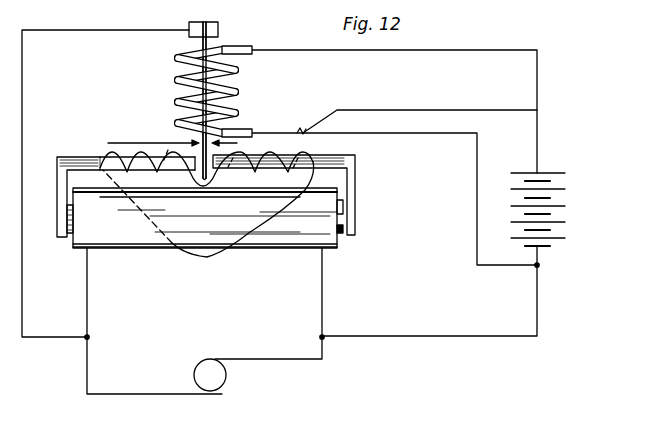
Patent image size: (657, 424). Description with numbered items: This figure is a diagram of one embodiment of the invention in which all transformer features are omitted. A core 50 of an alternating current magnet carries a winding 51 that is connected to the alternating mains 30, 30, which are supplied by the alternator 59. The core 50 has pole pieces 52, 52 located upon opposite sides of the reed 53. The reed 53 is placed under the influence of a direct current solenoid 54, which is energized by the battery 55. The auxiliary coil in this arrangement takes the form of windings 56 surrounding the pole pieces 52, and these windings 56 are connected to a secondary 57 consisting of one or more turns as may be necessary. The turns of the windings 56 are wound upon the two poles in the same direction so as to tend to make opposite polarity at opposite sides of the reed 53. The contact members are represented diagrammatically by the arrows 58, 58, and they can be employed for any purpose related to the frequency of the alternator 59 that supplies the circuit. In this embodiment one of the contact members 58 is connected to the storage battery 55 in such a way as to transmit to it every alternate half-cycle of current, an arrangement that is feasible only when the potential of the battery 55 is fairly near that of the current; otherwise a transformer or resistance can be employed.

The alternating mains 30 is at (87, 308).
The core 50 is at (341, 233).
The winding 51 is at (292, 236).
The pole pieces 52 is at (73, 157).
The reed 53 is at (190, 43).
The direct current solenoid 54 is at (236, 93).
The battery 55 is at (552, 209).
The windings 56 is at (158, 176).
The secondary 57 is at (263, 216).
The contact members 58 is at (143, 138).
The alternator 59 is at (212, 366).